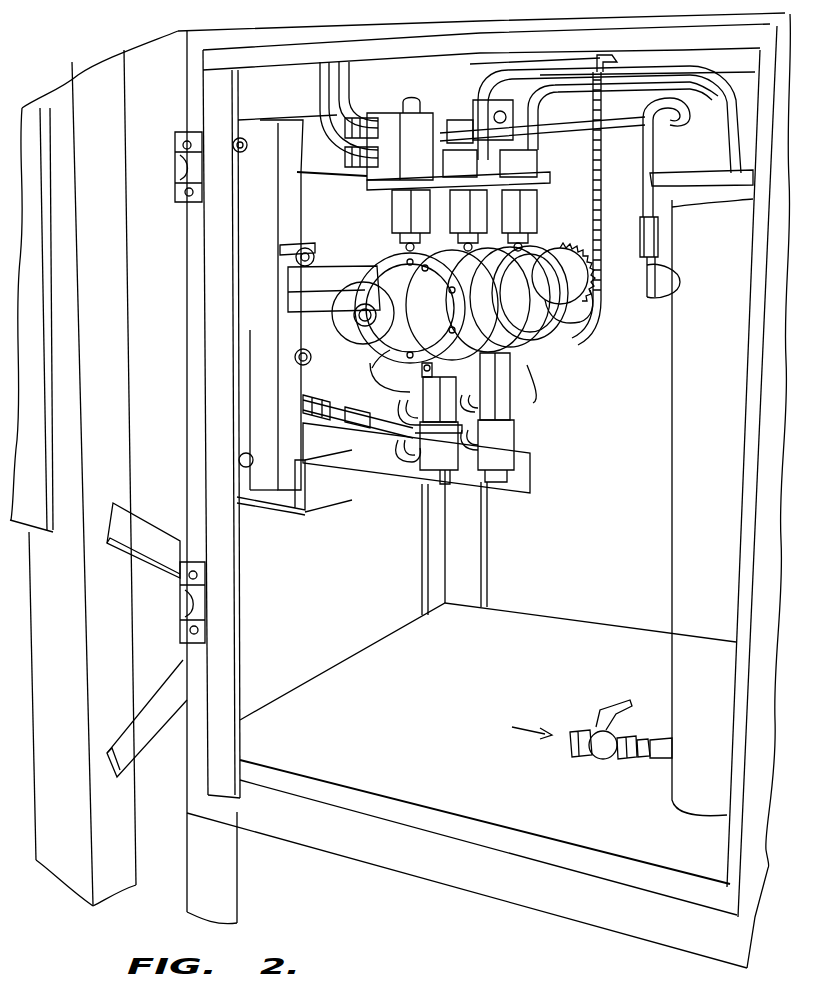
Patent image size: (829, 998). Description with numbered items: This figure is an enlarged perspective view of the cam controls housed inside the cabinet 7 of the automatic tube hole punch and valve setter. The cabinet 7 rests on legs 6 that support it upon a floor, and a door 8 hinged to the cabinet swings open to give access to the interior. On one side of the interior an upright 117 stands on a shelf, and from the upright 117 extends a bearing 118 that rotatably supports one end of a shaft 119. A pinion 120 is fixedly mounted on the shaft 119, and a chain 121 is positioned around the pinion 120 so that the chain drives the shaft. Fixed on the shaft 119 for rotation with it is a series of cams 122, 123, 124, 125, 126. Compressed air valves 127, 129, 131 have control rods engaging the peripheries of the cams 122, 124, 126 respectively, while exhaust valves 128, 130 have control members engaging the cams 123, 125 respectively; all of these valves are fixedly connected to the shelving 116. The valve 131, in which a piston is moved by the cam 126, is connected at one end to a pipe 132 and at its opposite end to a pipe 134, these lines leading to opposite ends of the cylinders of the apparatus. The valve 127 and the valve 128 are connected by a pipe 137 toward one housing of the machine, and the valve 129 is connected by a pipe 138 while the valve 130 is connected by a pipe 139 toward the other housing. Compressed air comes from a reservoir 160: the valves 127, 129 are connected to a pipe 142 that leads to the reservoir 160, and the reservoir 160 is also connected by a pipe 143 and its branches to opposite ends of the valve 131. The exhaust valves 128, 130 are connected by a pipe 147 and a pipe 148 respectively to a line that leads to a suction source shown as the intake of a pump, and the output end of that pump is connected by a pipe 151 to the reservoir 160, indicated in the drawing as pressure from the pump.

The legs 6 is at (233, 880).
The cabinet 7 is at (447, 797).
The door 8 is at (80, 90).
The shelving 116 is at (328, 530).
The upright 117 is at (262, 216).
The bearing 118 is at (320, 274).
The shaft 119 is at (363, 330).
The pinion 120 is at (596, 335).
The chain 121 is at (598, 208).
The cam 122 is at (547, 350).
The cam 123 is at (533, 357).
The cam 124 is at (537, 240).
The cam 125 is at (527, 365).
The cam 126 is at (418, 364).
The compressed air valve 127 is at (523, 210).
The exhaust valve 128 is at (517, 418).
The compressed air valve 129 is at (538, 178).
The exhaust valve 130 is at (430, 480).
The compressed air valve 131 is at (397, 208).
The pipe 132 is at (320, 85).
The pipe 134 is at (352, 96).
The pipe 137 is at (473, 448).
The pipe 138 is at (482, 96).
The pipe 139 is at (357, 413).
The pipe 142 is at (673, 67).
The pipe 143 is at (652, 160).
The pipe 147 is at (533, 403).
The pipe 148 is at (387, 398).
The pipe 151 is at (603, 747).
The reservoir 160 is at (672, 530).